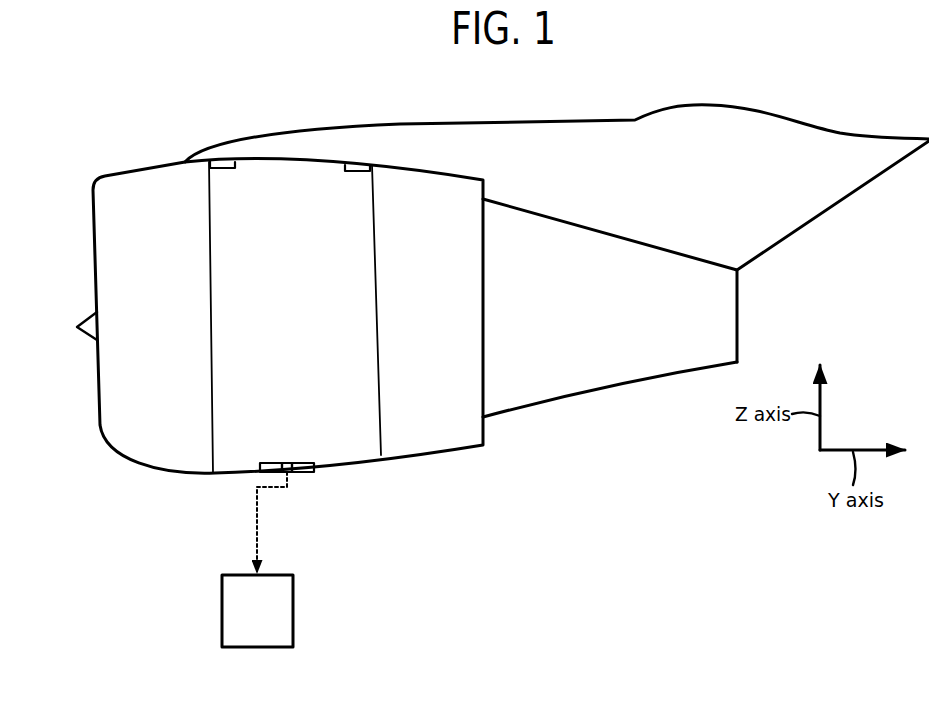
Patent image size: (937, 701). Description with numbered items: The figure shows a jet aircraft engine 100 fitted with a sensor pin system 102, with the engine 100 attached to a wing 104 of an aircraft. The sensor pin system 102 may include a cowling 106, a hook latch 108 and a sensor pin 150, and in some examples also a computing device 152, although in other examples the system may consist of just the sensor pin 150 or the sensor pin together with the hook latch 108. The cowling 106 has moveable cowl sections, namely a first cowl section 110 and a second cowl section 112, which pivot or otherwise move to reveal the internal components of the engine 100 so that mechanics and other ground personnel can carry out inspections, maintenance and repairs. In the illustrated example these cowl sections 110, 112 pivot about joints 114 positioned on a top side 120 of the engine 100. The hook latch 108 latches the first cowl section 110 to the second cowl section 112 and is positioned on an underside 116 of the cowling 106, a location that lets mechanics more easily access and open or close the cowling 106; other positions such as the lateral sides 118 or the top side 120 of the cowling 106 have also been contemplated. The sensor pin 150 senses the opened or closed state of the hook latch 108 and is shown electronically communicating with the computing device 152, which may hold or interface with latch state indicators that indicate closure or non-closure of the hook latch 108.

The jet aircraft engine 100 is at (475, 306).
The sensor pin system 102 is at (319, 559).
The wing 104 is at (397, 145).
The cowling 106 is at (199, 294).
The hook latch 108 is at (286, 463).
The first cowl section 110 is at (229, 247).
The second cowl section 112 is at (246, 486).
The joints 114 is at (224, 170).
The underside 116 is at (353, 487).
The lateral sides 118 is at (303, 325).
The top side 120 is at (302, 152).
The sensor pin 150 is at (289, 472).
The computing device 152 is at (294, 608).